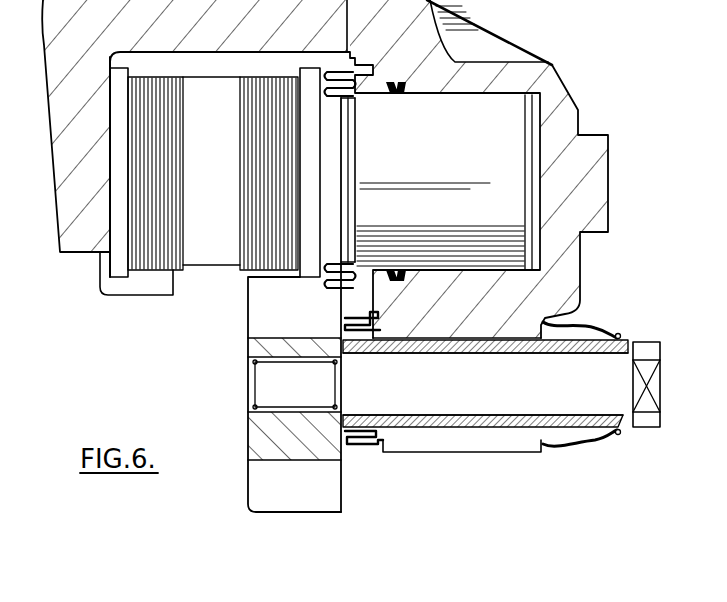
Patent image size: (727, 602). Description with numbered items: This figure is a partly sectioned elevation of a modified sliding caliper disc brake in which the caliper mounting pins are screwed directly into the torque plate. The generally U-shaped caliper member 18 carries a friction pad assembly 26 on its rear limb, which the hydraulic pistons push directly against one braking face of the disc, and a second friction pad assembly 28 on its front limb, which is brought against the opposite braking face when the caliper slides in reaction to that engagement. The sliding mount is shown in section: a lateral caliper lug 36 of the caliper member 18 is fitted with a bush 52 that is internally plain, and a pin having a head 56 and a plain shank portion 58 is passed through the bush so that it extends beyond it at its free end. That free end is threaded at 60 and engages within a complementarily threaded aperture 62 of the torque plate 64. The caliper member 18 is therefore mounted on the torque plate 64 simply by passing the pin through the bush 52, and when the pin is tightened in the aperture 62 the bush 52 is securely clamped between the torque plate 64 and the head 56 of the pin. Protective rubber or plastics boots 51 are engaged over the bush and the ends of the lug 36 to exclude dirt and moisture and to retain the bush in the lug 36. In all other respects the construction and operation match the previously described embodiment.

The caliper member 18 is at (556, 66).
The friction pad assembly 26 is at (241, 274).
The second friction pad assembly 28 is at (148, 276).
The caliper lug 36 is at (484, 430).
The protective boot 51 is at (595, 330).
The bush 52 is at (523, 422).
The pin head 56 is at (640, 428).
The plain shank portion 58 is at (446, 395).
The threaded free end 60 is at (264, 413).
The threaded aperture 62 is at (308, 413).
The torque plate 64 is at (250, 514).